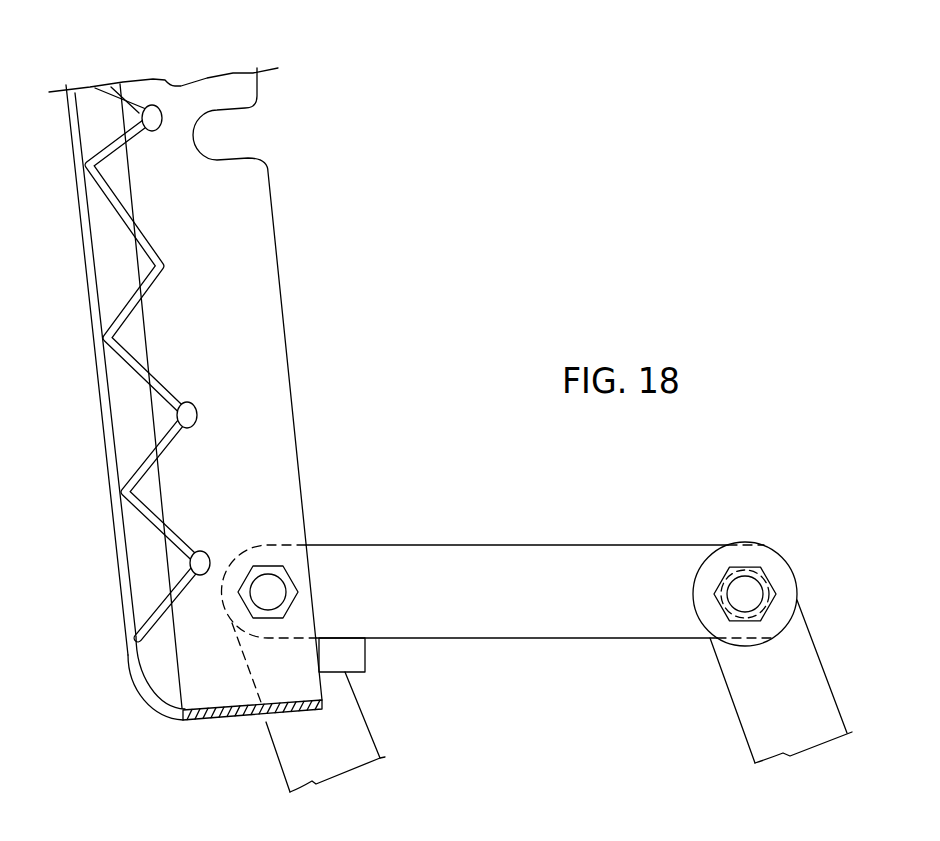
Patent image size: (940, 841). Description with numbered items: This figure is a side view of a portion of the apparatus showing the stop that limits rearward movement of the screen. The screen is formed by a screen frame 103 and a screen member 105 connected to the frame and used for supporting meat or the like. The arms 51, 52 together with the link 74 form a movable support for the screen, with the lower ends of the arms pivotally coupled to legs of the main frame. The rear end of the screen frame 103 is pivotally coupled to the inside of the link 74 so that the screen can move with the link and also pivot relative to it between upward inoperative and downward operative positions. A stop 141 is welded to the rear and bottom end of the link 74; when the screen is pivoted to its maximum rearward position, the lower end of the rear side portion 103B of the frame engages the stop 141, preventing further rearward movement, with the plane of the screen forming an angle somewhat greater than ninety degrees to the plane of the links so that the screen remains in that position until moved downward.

The screen member 105 is at (128, 653).
The screen frame 103 is at (237, 719).
The side portion of the screen frame 103B is at (293, 416).
The link 74 is at (403, 545).
The stop 141 is at (367, 660).
The rear arm 51 is at (367, 719).
The forward arm 52 is at (822, 659).